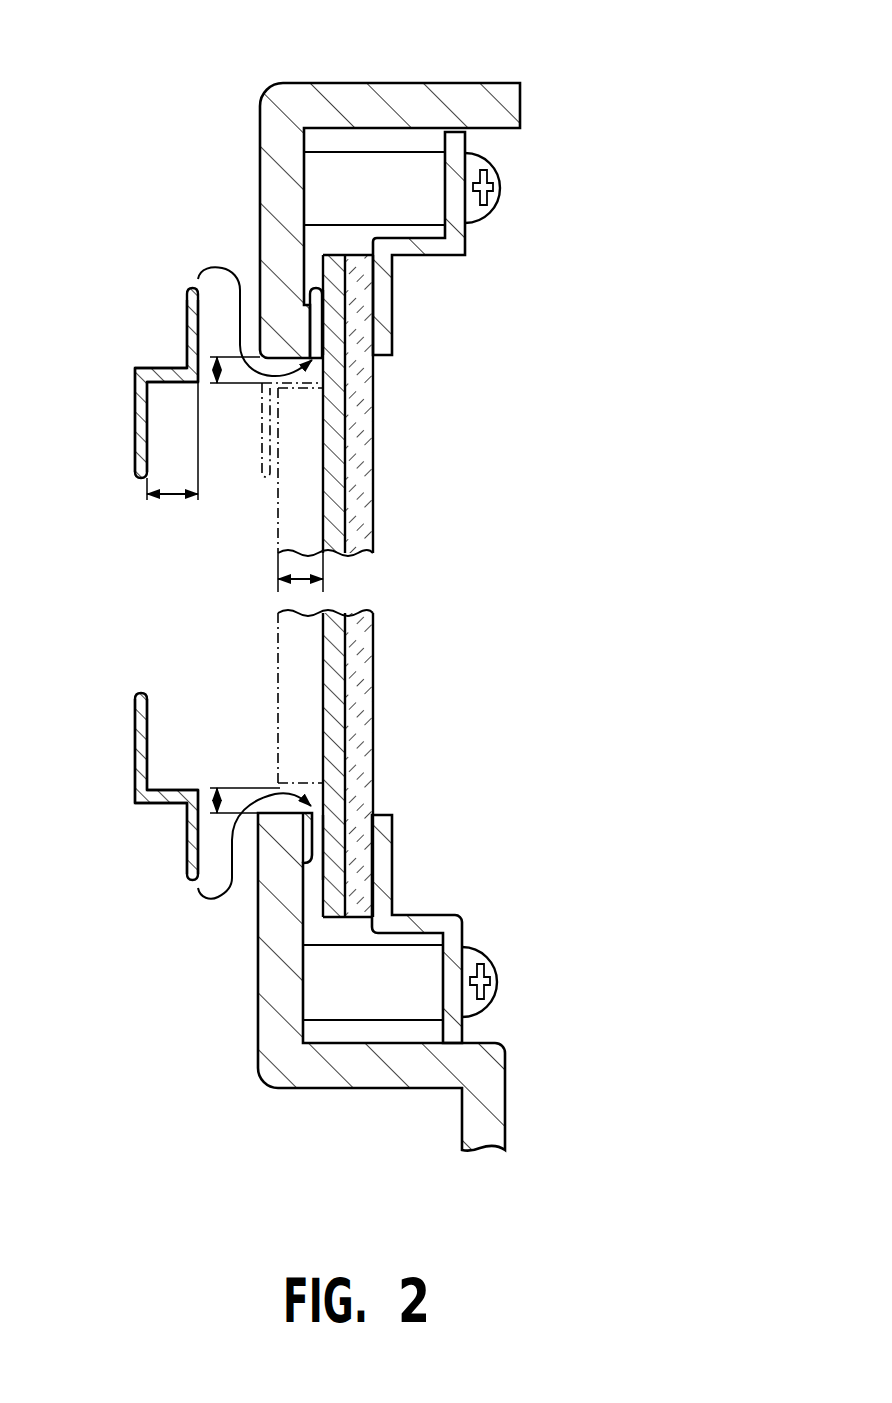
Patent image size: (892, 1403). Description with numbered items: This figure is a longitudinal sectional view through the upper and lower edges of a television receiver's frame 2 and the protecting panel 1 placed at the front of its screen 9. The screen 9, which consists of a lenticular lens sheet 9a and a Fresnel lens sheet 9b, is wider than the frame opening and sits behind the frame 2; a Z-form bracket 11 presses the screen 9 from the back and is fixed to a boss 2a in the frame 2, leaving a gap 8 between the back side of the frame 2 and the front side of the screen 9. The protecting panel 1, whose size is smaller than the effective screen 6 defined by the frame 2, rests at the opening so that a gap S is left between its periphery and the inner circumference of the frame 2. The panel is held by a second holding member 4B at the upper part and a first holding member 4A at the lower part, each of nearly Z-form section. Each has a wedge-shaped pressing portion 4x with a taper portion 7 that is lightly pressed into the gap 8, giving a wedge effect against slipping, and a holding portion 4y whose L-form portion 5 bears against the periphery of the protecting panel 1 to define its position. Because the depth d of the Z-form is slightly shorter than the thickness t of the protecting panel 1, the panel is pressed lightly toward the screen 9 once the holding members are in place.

The protecting panel 1 is at (298, 495).
The frame 2 is at (357, 92).
The boss 2a is at (402, 165).
The first holding member 4A is at (133, 767).
The second holding member 4B is at (133, 393).
The pressing portion 4x is at (187, 330).
The holding portion 4y is at (136, 475).
The L-form portion 5 is at (157, 383).
The effective screen 6 is at (313, 330).
The taper portion 7 is at (198, 278).
The gap 8 is at (318, 335).
The screen 9 is at (426, 586).
The lenticular lens sheet 9a is at (337, 490).
The Fresnel lens sheet 9b is at (370, 540).
The bracket 11 is at (455, 238).
The gap S is at (245, 587).
The depth d is at (172, 456).
The thickness t is at (303, 582).